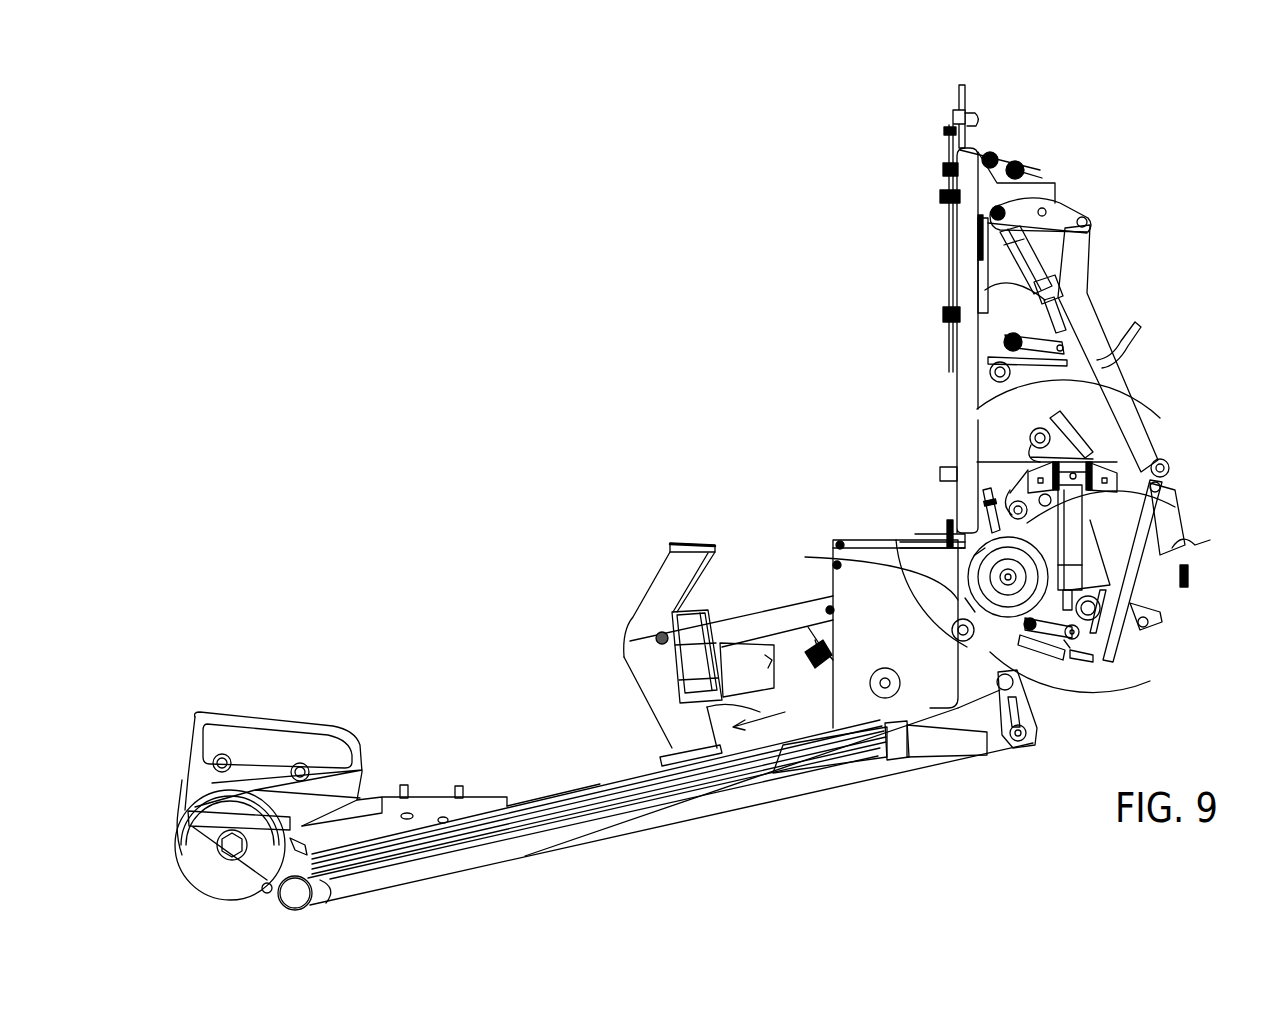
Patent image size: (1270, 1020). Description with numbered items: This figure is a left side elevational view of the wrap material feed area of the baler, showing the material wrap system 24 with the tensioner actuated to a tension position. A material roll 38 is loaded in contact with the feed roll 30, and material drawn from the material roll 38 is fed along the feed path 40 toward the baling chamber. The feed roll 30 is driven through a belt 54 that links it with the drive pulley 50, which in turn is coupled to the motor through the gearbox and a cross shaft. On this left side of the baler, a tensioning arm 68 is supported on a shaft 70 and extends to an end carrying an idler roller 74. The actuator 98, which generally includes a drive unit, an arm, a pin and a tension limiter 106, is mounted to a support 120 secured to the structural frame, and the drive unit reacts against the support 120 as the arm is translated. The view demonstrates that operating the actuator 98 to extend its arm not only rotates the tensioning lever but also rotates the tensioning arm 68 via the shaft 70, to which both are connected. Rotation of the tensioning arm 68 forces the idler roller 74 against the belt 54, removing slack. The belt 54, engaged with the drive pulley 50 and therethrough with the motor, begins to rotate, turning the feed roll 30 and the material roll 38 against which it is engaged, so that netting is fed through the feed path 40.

The material wrap system 24 is at (806, 484).
The feed roll 30 is at (1140, 500).
The material roll 38 is at (1082, 412).
The feed path 40 is at (660, 720).
The drive pulley 50 is at (883, 686).
The belt 54 is at (833, 557).
The tensioning arm 68 is at (1047, 660).
The shaft 70 is at (1112, 650).
The idler roller 74 is at (1032, 668).
The actuator 98 is at (760, 588).
The tension limiter 106 is at (622, 652).
The support 120 is at (622, 630).